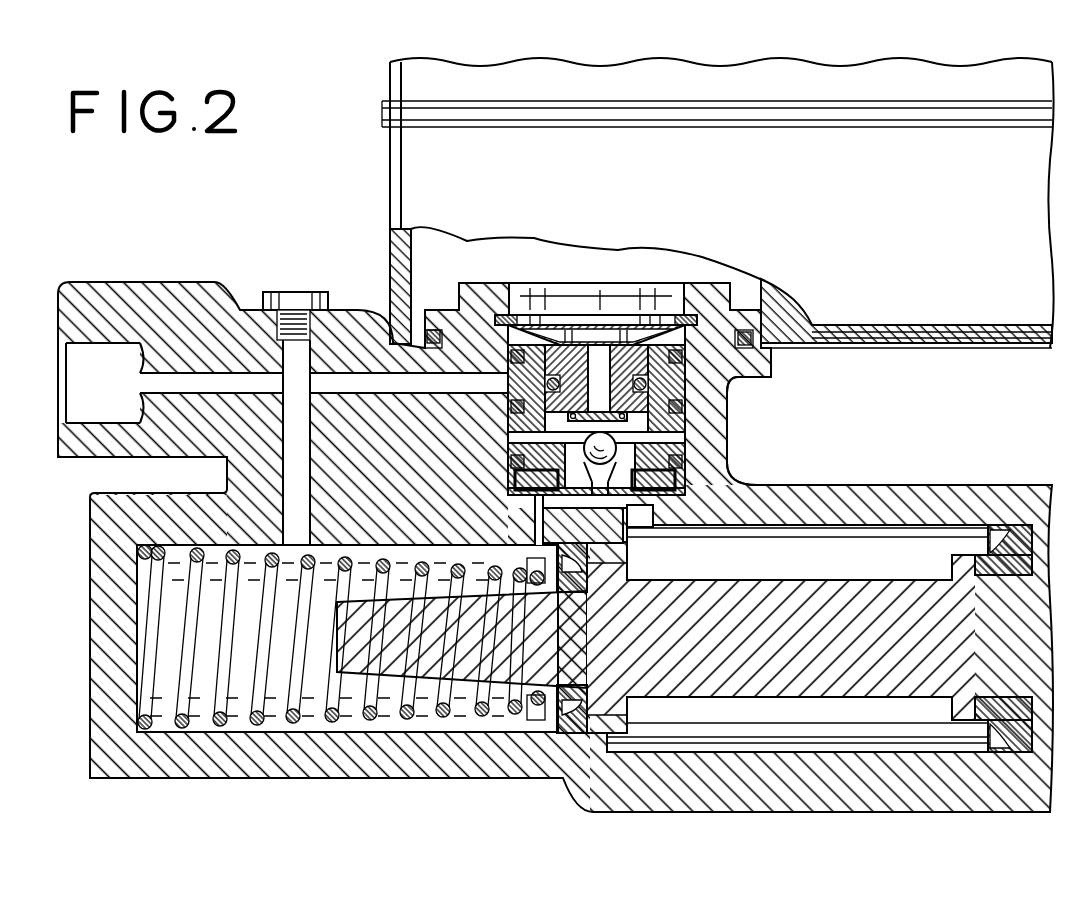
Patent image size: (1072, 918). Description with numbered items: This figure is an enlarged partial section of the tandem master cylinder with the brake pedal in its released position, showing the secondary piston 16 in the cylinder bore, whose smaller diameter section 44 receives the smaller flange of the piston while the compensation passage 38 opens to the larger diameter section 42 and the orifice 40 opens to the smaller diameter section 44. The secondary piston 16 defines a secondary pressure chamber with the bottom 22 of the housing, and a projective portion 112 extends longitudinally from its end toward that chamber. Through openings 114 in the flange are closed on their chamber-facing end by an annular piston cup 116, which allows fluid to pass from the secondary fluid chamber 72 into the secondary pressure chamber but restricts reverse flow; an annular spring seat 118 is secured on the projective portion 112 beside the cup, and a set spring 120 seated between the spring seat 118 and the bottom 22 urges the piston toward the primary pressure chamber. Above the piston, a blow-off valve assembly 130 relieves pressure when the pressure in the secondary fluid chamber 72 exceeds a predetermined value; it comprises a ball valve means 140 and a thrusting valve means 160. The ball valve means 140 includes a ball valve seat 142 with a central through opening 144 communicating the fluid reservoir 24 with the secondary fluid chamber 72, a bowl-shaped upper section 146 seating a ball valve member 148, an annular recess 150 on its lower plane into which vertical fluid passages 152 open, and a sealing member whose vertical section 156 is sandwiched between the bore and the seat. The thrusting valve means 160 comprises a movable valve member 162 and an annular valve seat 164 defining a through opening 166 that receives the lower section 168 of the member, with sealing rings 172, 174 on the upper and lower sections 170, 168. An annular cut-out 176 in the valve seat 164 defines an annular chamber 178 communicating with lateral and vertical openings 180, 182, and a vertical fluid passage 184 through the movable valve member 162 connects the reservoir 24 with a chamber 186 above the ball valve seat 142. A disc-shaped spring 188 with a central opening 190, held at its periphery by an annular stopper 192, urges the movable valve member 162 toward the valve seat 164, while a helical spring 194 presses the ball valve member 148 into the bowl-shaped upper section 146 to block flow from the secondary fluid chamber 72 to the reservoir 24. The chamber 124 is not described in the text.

The secondary piston 16 is at (818, 600).
The bottom 22 is at (100, 635).
The fluid reservoir 24 is at (871, 197).
The compensation passage 38 is at (640, 518).
The orifice 40 is at (538, 522).
The larger diameter section 42 is at (855, 745).
The smaller diameter section 44 is at (355, 725).
The secondary fluid chamber 72 is at (805, 742).
The projective portion 112 is at (350, 650).
The through openings 114 is at (609, 568).
The annular piston cup 116 is at (577, 735).
The annular spring seat 118 is at (520, 703).
The set spring 120 is at (238, 562).
The chamber 124 is at (722, 482).
The blow-off valve assembly 130 is at (700, 300).
The ball valve means 140 is at (705, 366).
The ball valve seat 142 is at (660, 426).
The through opening 144 is at (603, 496).
The bowl-shaped upper section 146 is at (540, 462).
The ball valve member 148 is at (552, 436).
The annular recess 150 is at (658, 456).
The vertical fluid passages 152 is at (548, 451).
The vertical section 156 is at (510, 464).
The thrusting valve means 160 is at (571, 327).
The movable valve member 162 is at (612, 370).
The valve seat 164 is at (510, 406).
The through opening 166 is at (515, 366).
The lower section 168 is at (752, 336).
The upper section 170 is at (537, 343).
The sealing ring 172 is at (460, 306).
The sealing ring 174 is at (560, 392).
The annular cut-out 176 is at (732, 380).
The annular chamber 178 is at (760, 326).
The lateral opening 180 is at (370, 383).
The vertical opening 182 is at (290, 440).
The vertical fluid passage 184 is at (597, 400).
The chamber 186 is at (610, 412).
The disc-shaped spring 188 is at (658, 350).
The central opening 190 is at (630, 335).
The annular stopper 192 is at (690, 352).
The helical spring 194 is at (597, 420).